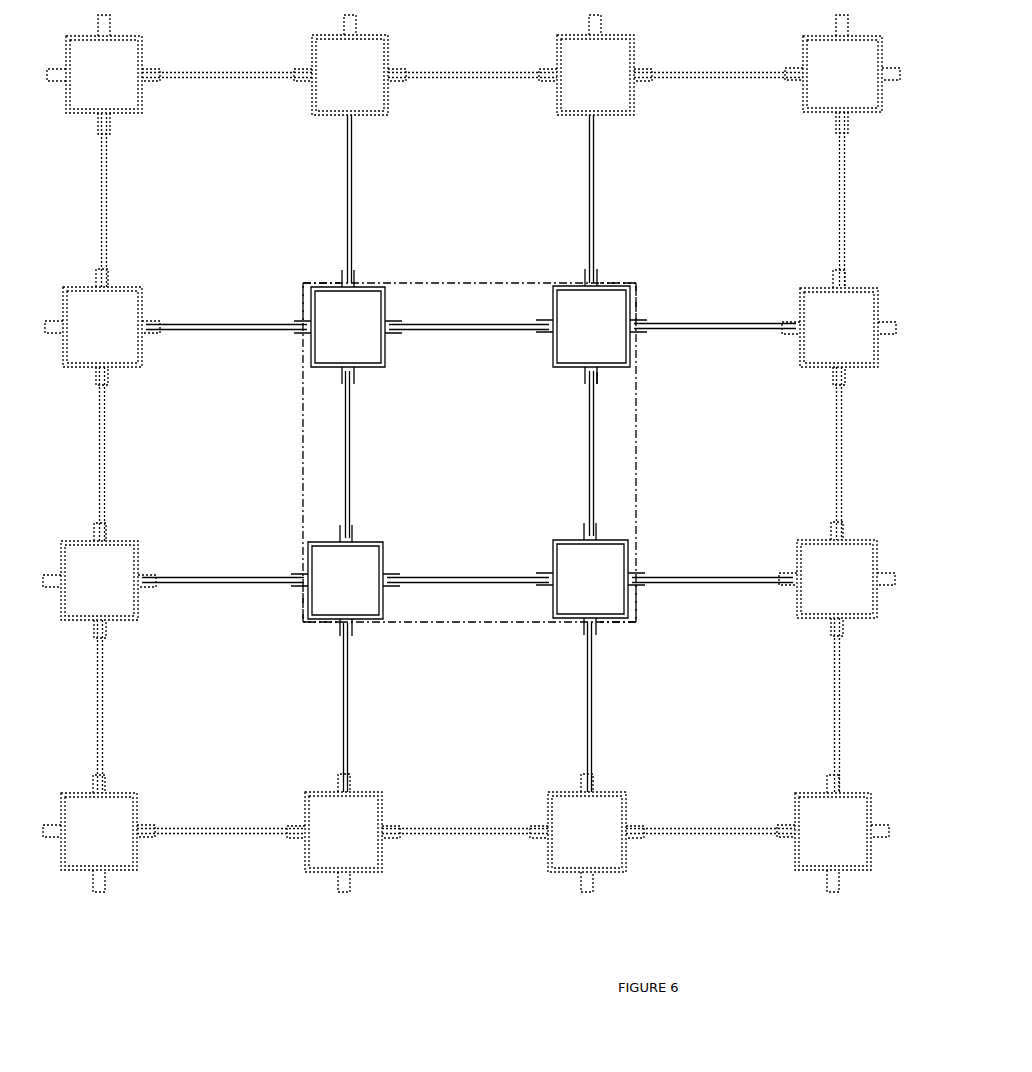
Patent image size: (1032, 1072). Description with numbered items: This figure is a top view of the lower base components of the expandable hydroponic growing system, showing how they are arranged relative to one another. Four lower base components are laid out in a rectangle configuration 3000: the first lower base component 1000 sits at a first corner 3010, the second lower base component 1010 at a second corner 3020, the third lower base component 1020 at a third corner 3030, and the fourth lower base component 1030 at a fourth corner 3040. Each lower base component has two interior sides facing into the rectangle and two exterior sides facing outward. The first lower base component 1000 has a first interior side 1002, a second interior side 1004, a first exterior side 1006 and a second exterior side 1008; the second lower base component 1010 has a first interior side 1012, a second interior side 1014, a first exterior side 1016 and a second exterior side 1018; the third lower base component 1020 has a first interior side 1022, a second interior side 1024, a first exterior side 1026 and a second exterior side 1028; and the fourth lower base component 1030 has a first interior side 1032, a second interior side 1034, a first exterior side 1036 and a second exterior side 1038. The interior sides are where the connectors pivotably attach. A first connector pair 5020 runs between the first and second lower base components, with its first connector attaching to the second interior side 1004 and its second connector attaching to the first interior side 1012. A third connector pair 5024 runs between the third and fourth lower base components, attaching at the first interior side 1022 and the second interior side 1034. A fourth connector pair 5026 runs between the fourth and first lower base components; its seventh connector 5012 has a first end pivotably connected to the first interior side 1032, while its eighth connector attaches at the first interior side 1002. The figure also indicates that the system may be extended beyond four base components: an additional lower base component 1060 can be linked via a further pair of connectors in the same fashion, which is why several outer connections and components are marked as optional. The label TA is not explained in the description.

The first lower base component 1000 is at (384, 283).
The first interior side of the first lower base component 1002 is at (371, 368).
The second interior side of the first lower base component 1004 is at (388, 308).
The first exterior side of the first lower base component 1006 is at (364, 283).
The second exterior side of the first lower base component 1008 is at (305, 340).
The second lower base component 1010 is at (636, 283).
The first interior side of the second lower base component 1012 is at (553, 334).
The second interior side of the second lower base component 1014 is at (582, 370).
The first exterior side of the second lower base component 1016 is at (608, 283).
The second exterior side of the second lower base component 1018 is at (639, 335).
The third lower base component 1020 is at (611, 540).
The first interior side of the third lower base component 1022 is at (552, 600).
The second interior side of the third lower base component 1024 is at (562, 540).
The first exterior side of the third lower base component 1026 is at (606, 630).
The second exterior side of the third lower base component 1028 is at (630, 549).
The fourth lower base component 1030 is at (385, 542).
The first interior side of the fourth lower base component 1032 is at (356, 540).
The second interior side of the fourth lower base component 1034 is at (384, 600).
The first exterior side of the fourth lower base component 1036 is at (356, 630).
The second exterior side of the fourth lower base component 1038 is at (300, 565).
The additional lower base component 1060 is at (139, 368).
The rectangle configuration 3000 is at (301, 458).
The first corner 3010 is at (301, 283).
The second corner 3020 is at (670, 301).
The third corner 3030 is at (646, 603).
The fourth corner 3040 is at (306, 624).
The seventh connector 5012 is at (587, 440).
The first connector pair 5020 is at (461, 332).
The third connector pair 5024 is at (461, 578).
The fourth connector pair 5026 is at (355, 452).
The test access port TA is at (601, 382).